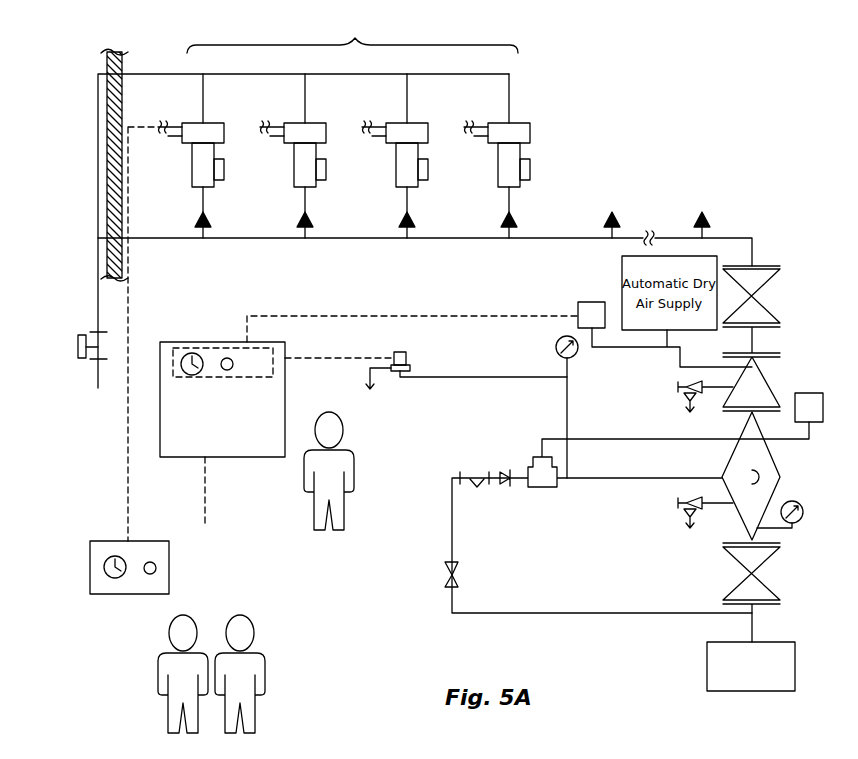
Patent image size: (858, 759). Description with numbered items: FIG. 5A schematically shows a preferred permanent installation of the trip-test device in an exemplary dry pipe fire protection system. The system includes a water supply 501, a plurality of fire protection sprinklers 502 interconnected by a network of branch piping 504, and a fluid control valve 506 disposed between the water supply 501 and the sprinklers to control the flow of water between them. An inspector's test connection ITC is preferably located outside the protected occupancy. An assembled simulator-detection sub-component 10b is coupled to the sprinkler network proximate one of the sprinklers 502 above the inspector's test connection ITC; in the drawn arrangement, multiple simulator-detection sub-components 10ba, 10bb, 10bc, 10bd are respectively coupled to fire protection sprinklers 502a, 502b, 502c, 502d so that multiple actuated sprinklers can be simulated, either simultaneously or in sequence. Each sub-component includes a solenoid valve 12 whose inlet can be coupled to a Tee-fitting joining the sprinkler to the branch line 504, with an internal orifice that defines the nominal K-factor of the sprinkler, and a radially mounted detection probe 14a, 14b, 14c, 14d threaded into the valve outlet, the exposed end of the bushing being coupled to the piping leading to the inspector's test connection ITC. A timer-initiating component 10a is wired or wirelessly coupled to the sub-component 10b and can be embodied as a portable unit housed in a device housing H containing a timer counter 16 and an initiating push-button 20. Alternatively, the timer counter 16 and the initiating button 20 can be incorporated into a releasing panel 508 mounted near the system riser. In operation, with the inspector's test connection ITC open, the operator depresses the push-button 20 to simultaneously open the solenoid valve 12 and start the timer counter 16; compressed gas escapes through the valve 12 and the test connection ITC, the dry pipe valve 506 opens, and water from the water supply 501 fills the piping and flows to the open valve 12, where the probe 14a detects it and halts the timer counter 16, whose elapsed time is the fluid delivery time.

The simulator-detection sub-component 10b is at (352, 35).
The simulator-detection sub-component 10ba is at (207, 122).
The simulator-detection sub-component 10bb is at (309, 122).
The simulator-detection sub-component 10bc is at (411, 122).
The simulator-detection sub-component 10bd is at (513, 122).
The solenoid valve 12 is at (211, 171).
The detection probe 14a is at (179, 139).
The detection probe 14b is at (281, 139).
The detection probe 14c is at (383, 139).
The detection probe 14d is at (485, 139).
The first fire protection sprinkler 502a is at (211, 219).
The fire protection sprinkler 502b is at (313, 219).
The fire protection sprinkler 502c is at (415, 219).
The fire protection sprinkler 502d is at (517, 219).
The fire protection sprinklers 502 is at (616, 210).
The branch piping 504 is at (590, 236).
The fluid control valve 506 is at (770, 464).
The water supply 501 is at (795, 668).
The releasing panel 508 is at (247, 458).
The timer-initiating component 10a is at (273, 364).
The timer counter 16 is at (112, 558).
The initiating push-button 20 is at (156, 570).
The device housing H is at (112, 594).
The inspector's test connection ITC is at (78, 347).